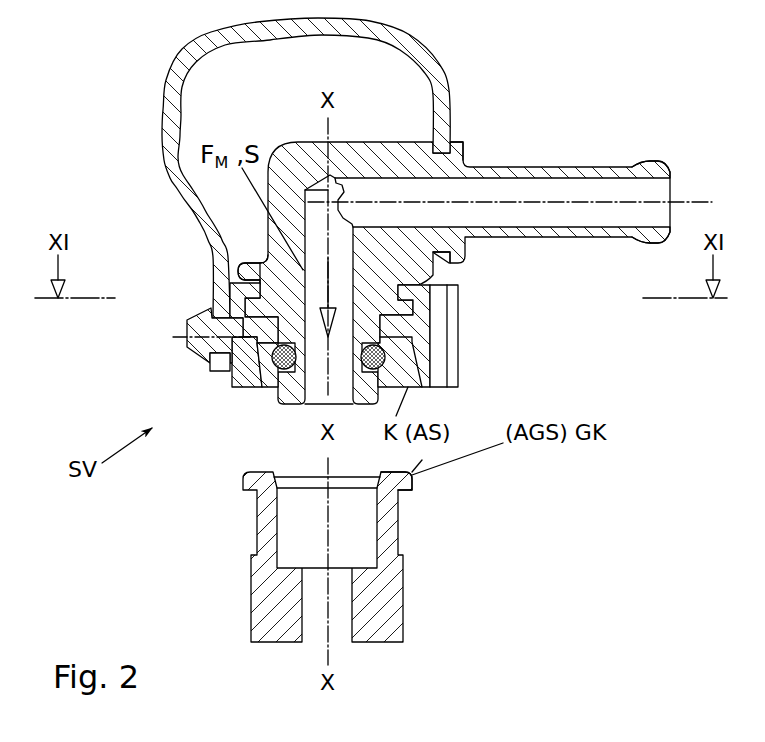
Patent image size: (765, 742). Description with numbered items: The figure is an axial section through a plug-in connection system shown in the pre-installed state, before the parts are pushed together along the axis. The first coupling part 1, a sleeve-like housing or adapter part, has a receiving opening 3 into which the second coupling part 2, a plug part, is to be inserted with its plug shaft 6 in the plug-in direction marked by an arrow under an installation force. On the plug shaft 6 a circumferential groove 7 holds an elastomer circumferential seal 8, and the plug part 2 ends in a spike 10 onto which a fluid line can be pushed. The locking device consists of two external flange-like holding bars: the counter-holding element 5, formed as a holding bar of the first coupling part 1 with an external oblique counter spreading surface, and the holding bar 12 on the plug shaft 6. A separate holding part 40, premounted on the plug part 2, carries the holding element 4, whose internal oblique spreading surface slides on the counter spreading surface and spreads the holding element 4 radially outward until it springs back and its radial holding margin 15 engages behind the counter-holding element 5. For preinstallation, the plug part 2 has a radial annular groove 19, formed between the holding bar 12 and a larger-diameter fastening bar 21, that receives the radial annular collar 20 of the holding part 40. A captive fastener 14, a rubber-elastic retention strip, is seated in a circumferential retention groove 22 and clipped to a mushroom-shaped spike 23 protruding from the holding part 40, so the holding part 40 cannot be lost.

The first coupling part 1 is at (232, 540).
The second coupling part 2 is at (502, 157).
The receiving opening 3 is at (304, 537).
The holding element 4 is at (417, 352).
The counter-holding element 5 is at (400, 485).
The plug shaft 6 is at (220, 320).
The groove 7 is at (278, 372).
The circumferential seal 8 is at (403, 372).
The spike 10 is at (648, 237).
The holding bar 12 is at (418, 308).
The captive fastener 14 is at (198, 73).
The radial holding margin 15 is at (402, 328).
The radial annular groove 19 is at (248, 280).
The radial annular collar 20 is at (210, 309).
The fastening bar 21 is at (205, 300).
The retention groove 22 is at (455, 143).
The mushroom-shaped spike 23 is at (200, 348).
The holding part 40 is at (420, 298).